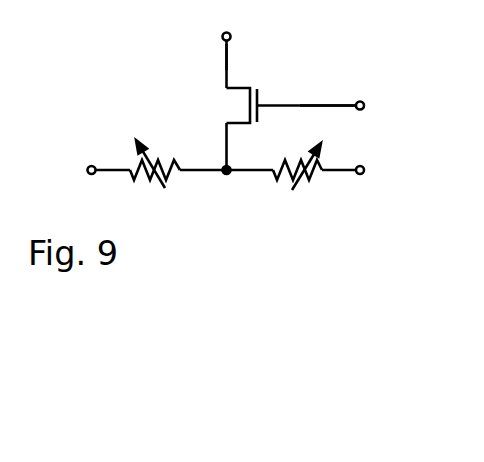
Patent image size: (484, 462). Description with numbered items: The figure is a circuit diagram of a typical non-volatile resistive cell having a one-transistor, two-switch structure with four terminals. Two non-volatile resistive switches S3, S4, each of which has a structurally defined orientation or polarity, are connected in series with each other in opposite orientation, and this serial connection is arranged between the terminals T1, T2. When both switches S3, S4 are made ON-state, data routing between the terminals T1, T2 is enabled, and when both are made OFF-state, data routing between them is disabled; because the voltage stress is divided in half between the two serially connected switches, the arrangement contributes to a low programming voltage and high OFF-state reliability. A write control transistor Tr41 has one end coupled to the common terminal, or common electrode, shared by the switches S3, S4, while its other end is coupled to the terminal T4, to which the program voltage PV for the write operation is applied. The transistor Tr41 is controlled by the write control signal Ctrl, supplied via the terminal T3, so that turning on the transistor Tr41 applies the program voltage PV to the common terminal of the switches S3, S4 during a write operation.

The terminal T1 is at (72, 171).
The terminal T2 is at (379, 171).
The terminal T3 is at (378, 111).
The terminal T4 is at (222, 20).
The non-volatile resistive switch S3 is at (155, 182).
The non-volatile resistive switch S4 is at (297, 183).
The write control transistor Tr41 is at (264, 105).
The program voltage PV is at (249, 59).
The write control signal Ctrl is at (328, 88).